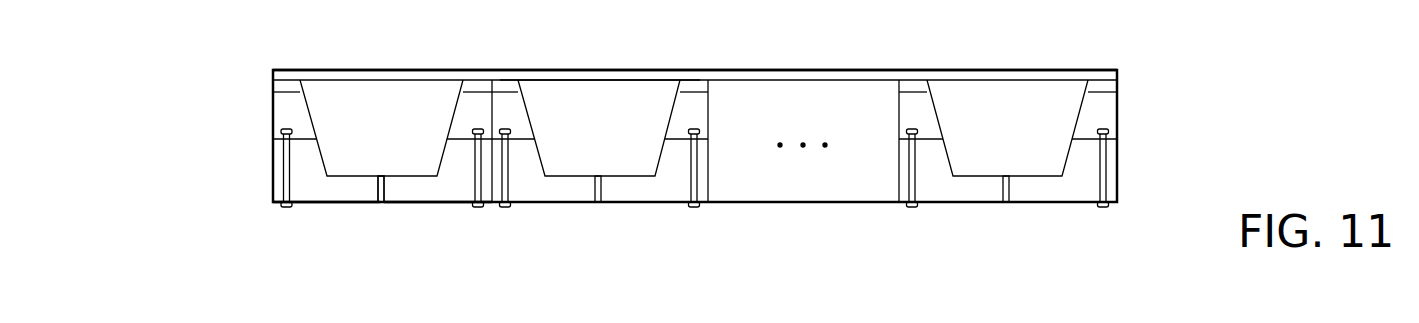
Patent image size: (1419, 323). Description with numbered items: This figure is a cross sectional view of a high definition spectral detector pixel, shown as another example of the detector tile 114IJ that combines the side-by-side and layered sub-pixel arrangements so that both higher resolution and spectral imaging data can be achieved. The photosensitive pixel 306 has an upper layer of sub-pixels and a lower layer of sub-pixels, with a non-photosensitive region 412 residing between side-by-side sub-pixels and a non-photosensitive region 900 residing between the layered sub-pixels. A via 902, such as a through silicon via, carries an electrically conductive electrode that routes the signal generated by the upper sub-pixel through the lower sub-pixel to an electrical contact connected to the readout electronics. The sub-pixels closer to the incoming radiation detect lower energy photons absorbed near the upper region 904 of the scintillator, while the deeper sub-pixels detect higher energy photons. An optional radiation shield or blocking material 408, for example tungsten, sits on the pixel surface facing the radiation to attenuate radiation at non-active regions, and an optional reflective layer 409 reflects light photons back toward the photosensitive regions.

The detector tile 114IJ is at (1118, 86).
The photosensitive pixel 306 is at (370, 70).
The reflective layer 409 is at (578, 76).
The via 902 is at (400, 128).
The upper region of the scintillator 904 is at (400, 170).
The non-photosensitive region 900 is at (278, 142).
The non-photosensitive region 412 is at (382, 207).
The radiation shield or blocking material 408 is at (505, 87).